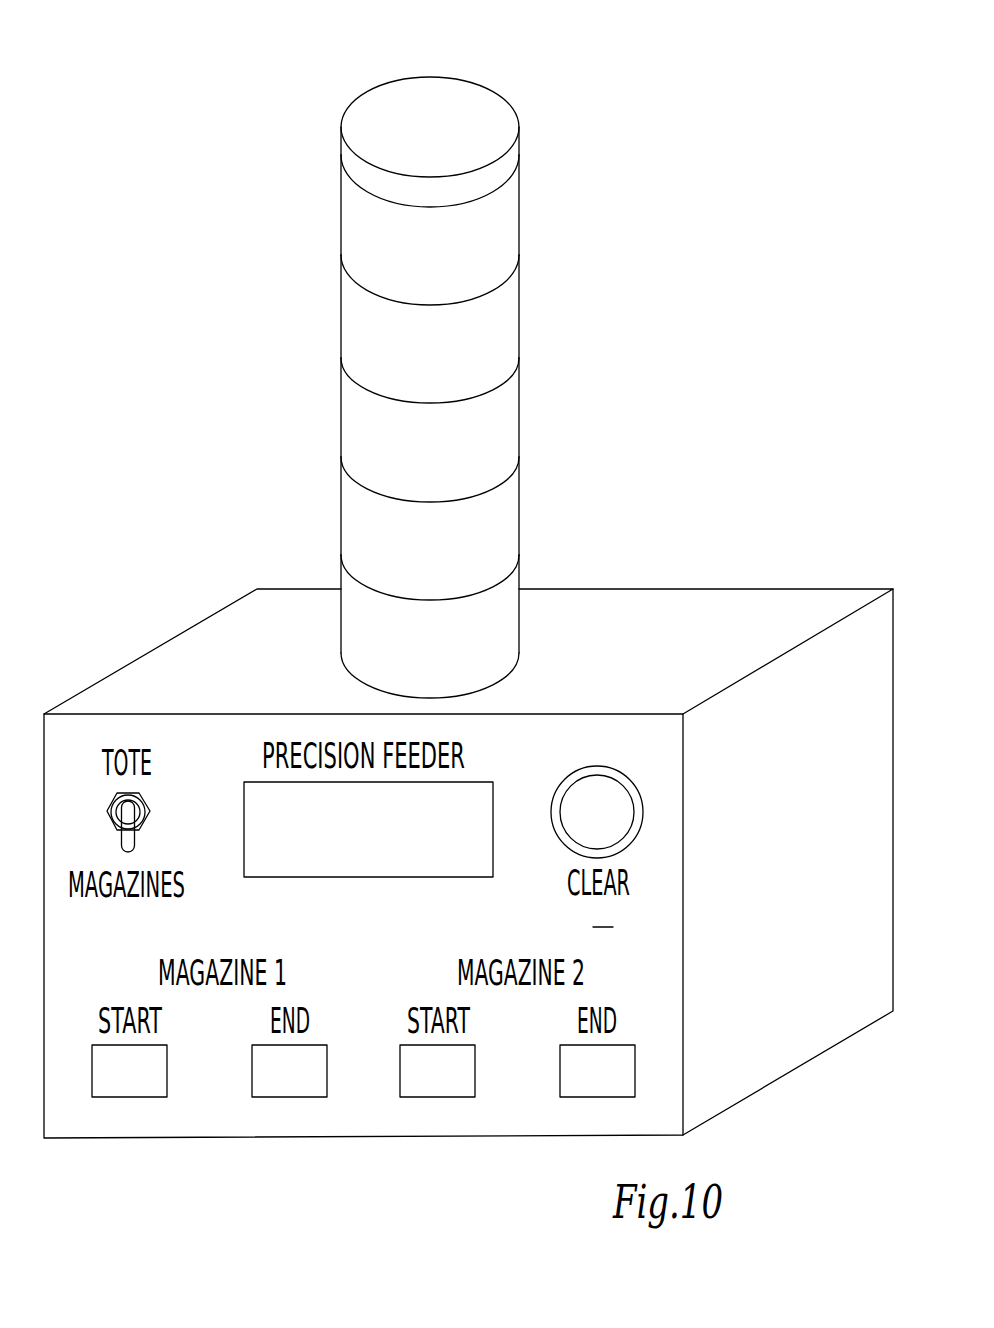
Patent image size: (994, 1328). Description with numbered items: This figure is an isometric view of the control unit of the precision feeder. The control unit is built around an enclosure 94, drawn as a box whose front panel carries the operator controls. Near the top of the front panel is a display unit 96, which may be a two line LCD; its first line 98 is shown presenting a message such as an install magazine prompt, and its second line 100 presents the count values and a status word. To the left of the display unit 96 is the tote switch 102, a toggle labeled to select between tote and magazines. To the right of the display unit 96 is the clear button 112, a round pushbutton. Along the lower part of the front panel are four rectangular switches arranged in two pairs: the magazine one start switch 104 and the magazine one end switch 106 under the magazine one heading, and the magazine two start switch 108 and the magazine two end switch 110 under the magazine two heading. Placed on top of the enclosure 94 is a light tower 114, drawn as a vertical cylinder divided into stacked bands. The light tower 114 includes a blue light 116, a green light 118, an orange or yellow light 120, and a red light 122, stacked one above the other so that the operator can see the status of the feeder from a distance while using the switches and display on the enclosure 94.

The enclosure 94 is at (692, 592).
The display unit 96 is at (370, 824).
The first line 98 is at (480, 802).
The second line 100 is at (480, 843).
The tote switch 102 is at (116, 805).
The magazine one start switch 104 is at (123, 1082).
The magazine one end switch 106 is at (283, 1082).
The magazine two start switch 108 is at (430, 1082).
The magazine two end switch 110 is at (590, 1082).
The clear button 112 is at (593, 788).
The light tower 114 is at (465, 359).
The blue light 116 is at (515, 512).
The green light 118 is at (515, 415).
The orange or yellow light 120 is at (515, 318).
The red light 122 is at (515, 218).